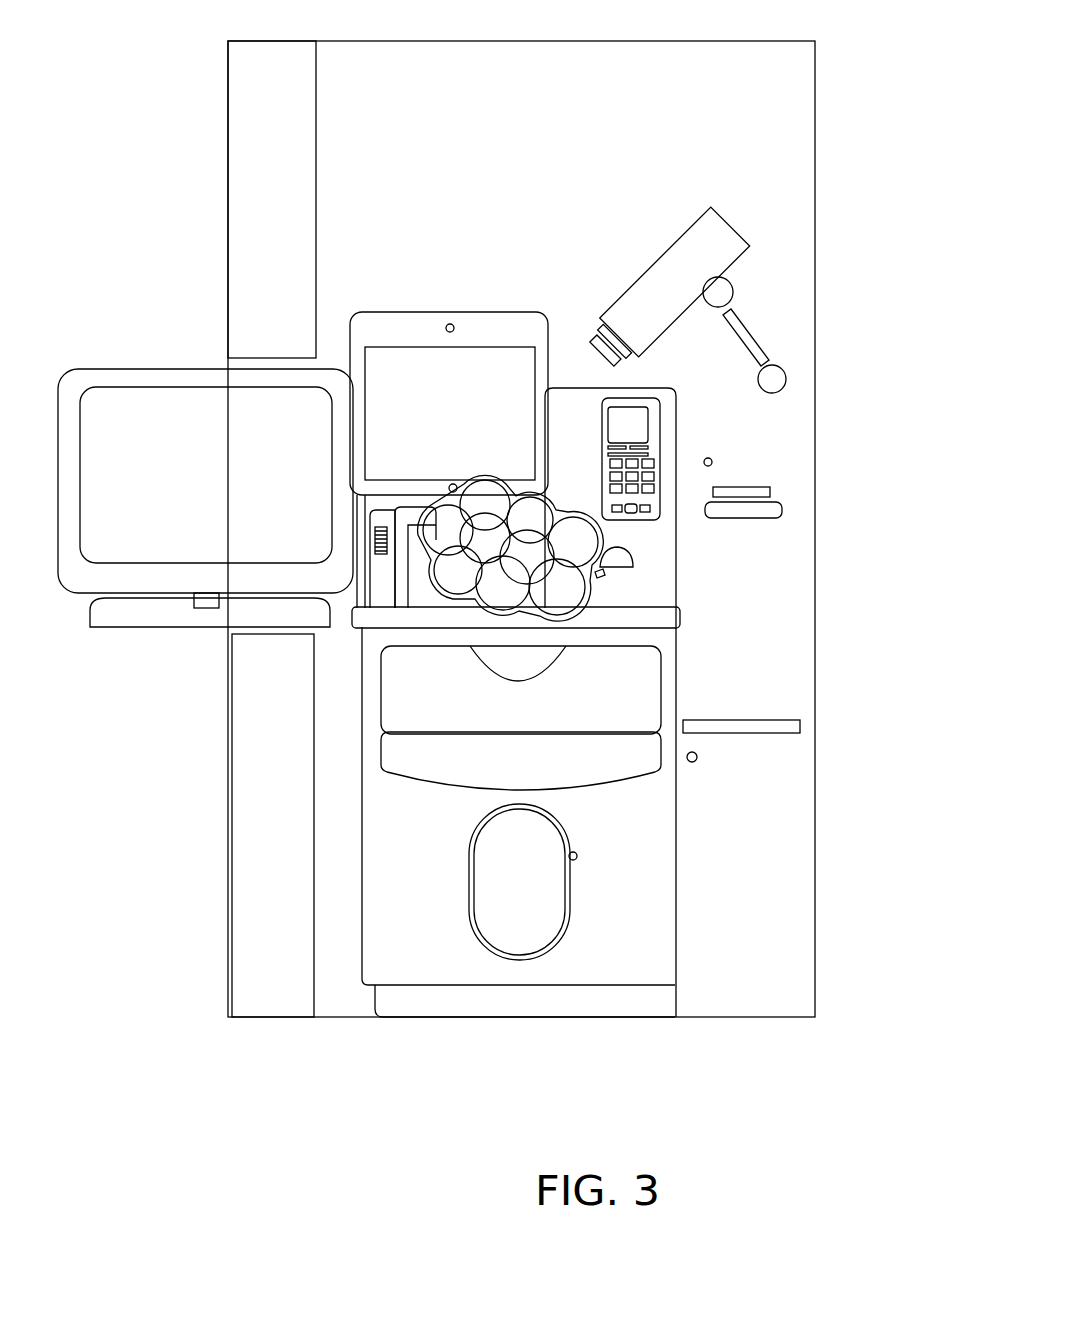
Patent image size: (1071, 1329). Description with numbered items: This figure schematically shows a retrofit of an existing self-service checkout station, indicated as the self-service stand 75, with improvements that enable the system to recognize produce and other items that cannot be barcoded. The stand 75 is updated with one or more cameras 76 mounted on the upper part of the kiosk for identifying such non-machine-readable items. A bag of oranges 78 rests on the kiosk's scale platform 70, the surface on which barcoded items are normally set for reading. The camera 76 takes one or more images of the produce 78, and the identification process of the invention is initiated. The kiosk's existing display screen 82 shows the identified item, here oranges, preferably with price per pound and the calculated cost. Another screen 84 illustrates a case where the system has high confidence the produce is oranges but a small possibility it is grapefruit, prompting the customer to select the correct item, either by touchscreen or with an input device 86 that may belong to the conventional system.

The self-service stand 75 is at (874, 98).
The cameras 76 is at (723, 229).
The display screen 82 is at (402, 358).
The screen 84 is at (127, 405).
The input device 86 is at (642, 472).
The bag of oranges 78 is at (582, 542).
The scale platform 70 is at (637, 607).